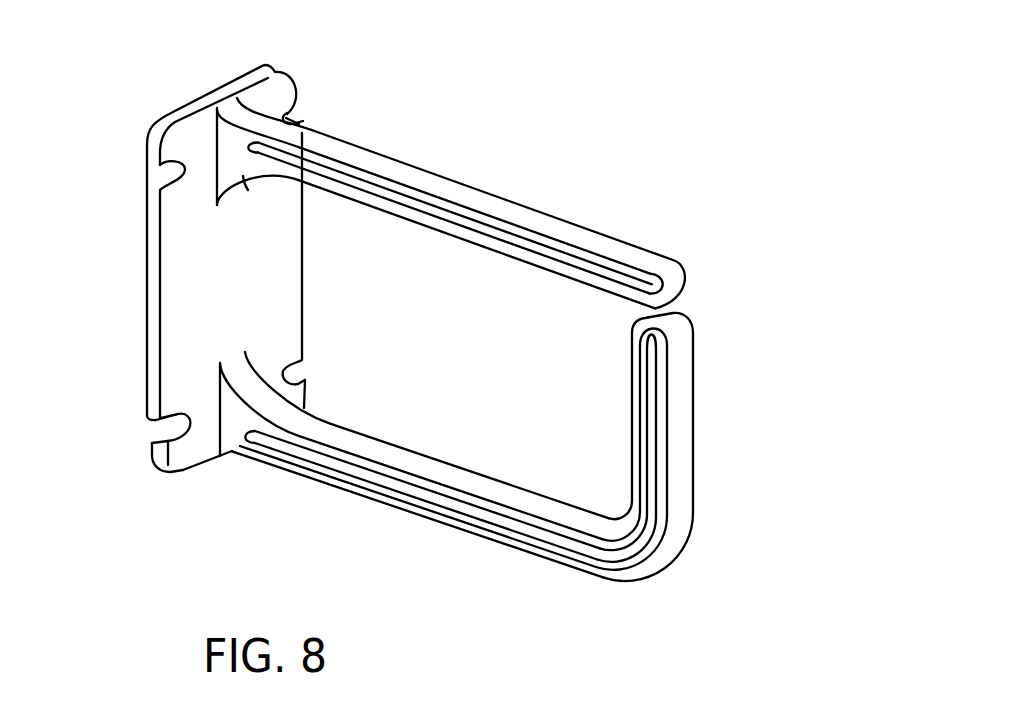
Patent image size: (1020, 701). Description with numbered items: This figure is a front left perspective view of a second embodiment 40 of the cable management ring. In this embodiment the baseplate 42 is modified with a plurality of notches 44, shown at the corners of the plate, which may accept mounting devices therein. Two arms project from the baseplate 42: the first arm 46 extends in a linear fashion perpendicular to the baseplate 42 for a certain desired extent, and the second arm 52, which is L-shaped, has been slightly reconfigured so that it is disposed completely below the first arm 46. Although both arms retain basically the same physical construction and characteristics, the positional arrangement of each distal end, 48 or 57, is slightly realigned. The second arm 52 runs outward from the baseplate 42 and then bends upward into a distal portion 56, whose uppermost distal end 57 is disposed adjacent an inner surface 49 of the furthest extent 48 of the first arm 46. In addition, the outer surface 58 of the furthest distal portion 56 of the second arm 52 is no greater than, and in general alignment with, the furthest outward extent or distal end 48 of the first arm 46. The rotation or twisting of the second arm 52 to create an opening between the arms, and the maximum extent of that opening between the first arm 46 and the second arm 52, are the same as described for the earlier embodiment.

The second embodiment 40 is at (458, 157).
The baseplate 42 is at (276, 80).
The notches 44 is at (300, 116).
The first arm 46 is at (498, 203).
The distal end of the first arm 48 is at (678, 287).
The inner surface 49 is at (613, 291).
The second arm 52 is at (430, 518).
The distal portion of the second arm 56 is at (684, 434).
The distal end of the second arm 57 is at (672, 322).
The outer surface 58 is at (676, 530).